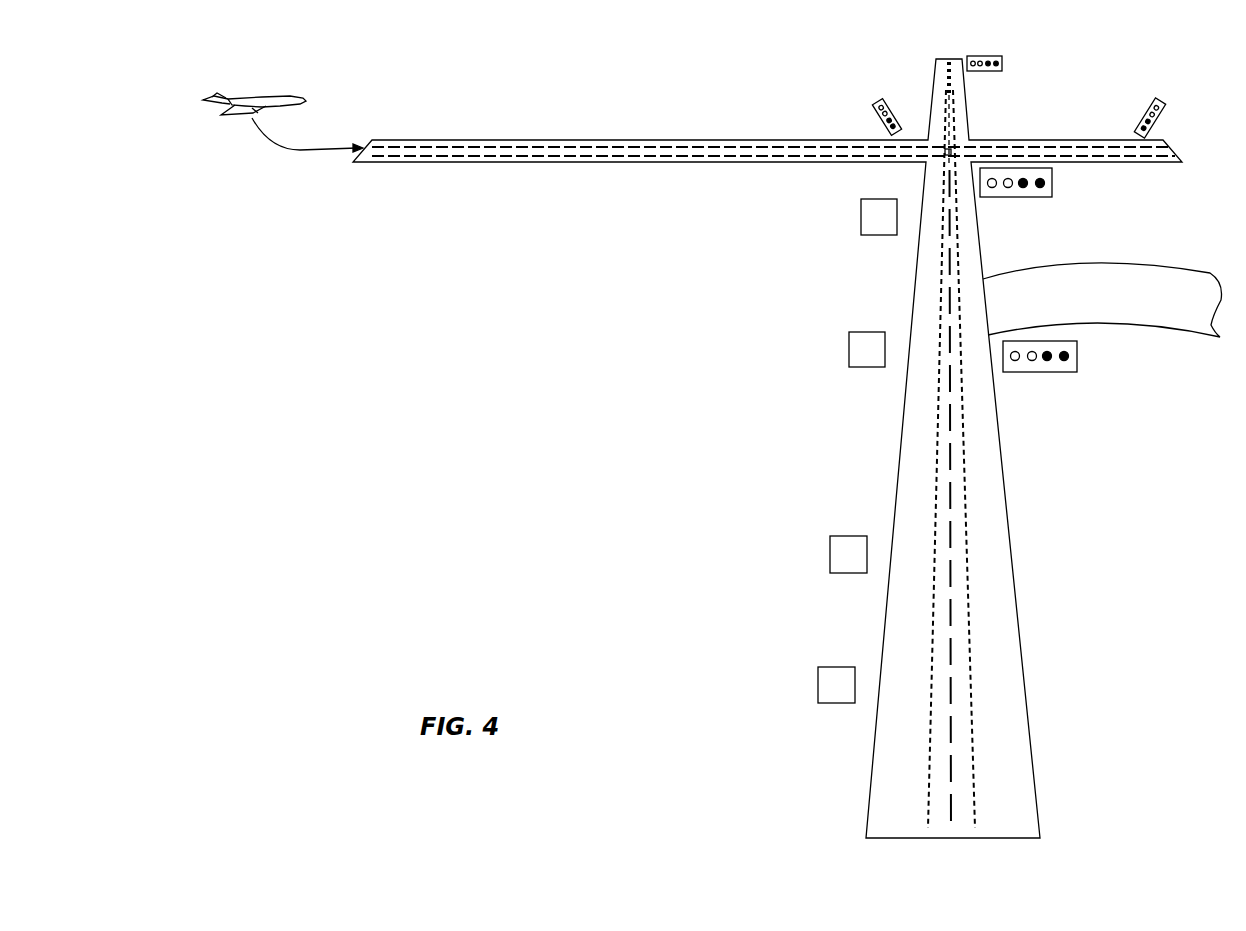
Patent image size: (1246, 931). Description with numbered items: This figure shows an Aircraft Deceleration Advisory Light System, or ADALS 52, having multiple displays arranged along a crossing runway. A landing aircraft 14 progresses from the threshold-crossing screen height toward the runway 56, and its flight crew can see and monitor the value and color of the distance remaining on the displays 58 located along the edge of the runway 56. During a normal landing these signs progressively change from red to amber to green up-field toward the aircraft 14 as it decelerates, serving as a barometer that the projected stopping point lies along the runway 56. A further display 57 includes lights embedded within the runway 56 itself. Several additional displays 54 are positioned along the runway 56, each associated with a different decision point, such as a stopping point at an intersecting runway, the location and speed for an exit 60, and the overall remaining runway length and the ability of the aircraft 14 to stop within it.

The aircraft 14 is at (287, 95).
The ADALS 52 is at (1130, 64).
The display 54 is at (1000, 56).
The runway 56 is at (904, 398).
The display 57 is at (955, 491).
The display 58 is at (861, 212).
The exit 60 is at (1127, 320).